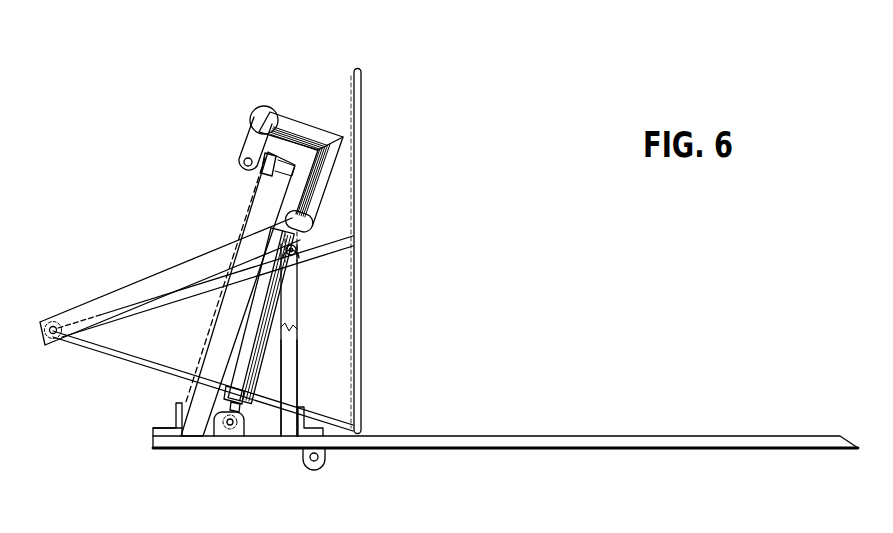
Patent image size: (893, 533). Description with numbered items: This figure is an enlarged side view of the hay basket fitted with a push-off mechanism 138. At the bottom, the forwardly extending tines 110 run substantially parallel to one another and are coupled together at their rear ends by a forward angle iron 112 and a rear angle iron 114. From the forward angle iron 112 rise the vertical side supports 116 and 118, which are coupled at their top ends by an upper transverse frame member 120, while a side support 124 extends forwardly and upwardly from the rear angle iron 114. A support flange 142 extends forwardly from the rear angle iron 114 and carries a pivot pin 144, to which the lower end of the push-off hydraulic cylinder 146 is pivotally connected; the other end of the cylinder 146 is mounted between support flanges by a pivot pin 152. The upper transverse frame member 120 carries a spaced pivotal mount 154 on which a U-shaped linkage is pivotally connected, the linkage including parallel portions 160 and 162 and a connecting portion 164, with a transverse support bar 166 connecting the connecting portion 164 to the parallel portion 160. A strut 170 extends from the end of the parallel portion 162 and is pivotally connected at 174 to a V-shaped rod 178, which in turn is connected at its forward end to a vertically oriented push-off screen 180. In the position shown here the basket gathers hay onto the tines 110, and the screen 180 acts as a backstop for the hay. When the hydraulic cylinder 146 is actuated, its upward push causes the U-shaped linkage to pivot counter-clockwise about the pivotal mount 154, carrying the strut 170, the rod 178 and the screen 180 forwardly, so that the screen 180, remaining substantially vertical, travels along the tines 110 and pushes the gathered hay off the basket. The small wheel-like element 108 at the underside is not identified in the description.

The caster wheel 108 is at (306, 462).
The tines 110 is at (683, 440).
The forward angle iron 112 is at (320, 434).
The rear angle iron 114 is at (164, 428).
The vertical side support 116 is at (293, 305).
The vertical side support 118 is at (293, 352).
The upper transverse frame member 120 is at (258, 172).
The side support 124 is at (196, 388).
The push-off mechanism 138 is at (292, 106).
The support flange 142 is at (212, 432).
The pivot pin 144 is at (233, 428).
The push-off hydraulic cylinder 146 is at (254, 361).
The pivot pin 152 is at (328, 236).
The pivotal mount 154 is at (242, 165).
The parallel portion 160 is at (250, 136).
The parallel portion 162 is at (328, 178).
The connecting portion 164 is at (313, 128).
The transverse support bar 166 is at (258, 106).
The strut 170 is at (155, 275).
The pivotal connection 174 is at (53, 341).
The V-shaped rod 178 is at (106, 352).
The push-off screen 180 is at (357, 98).